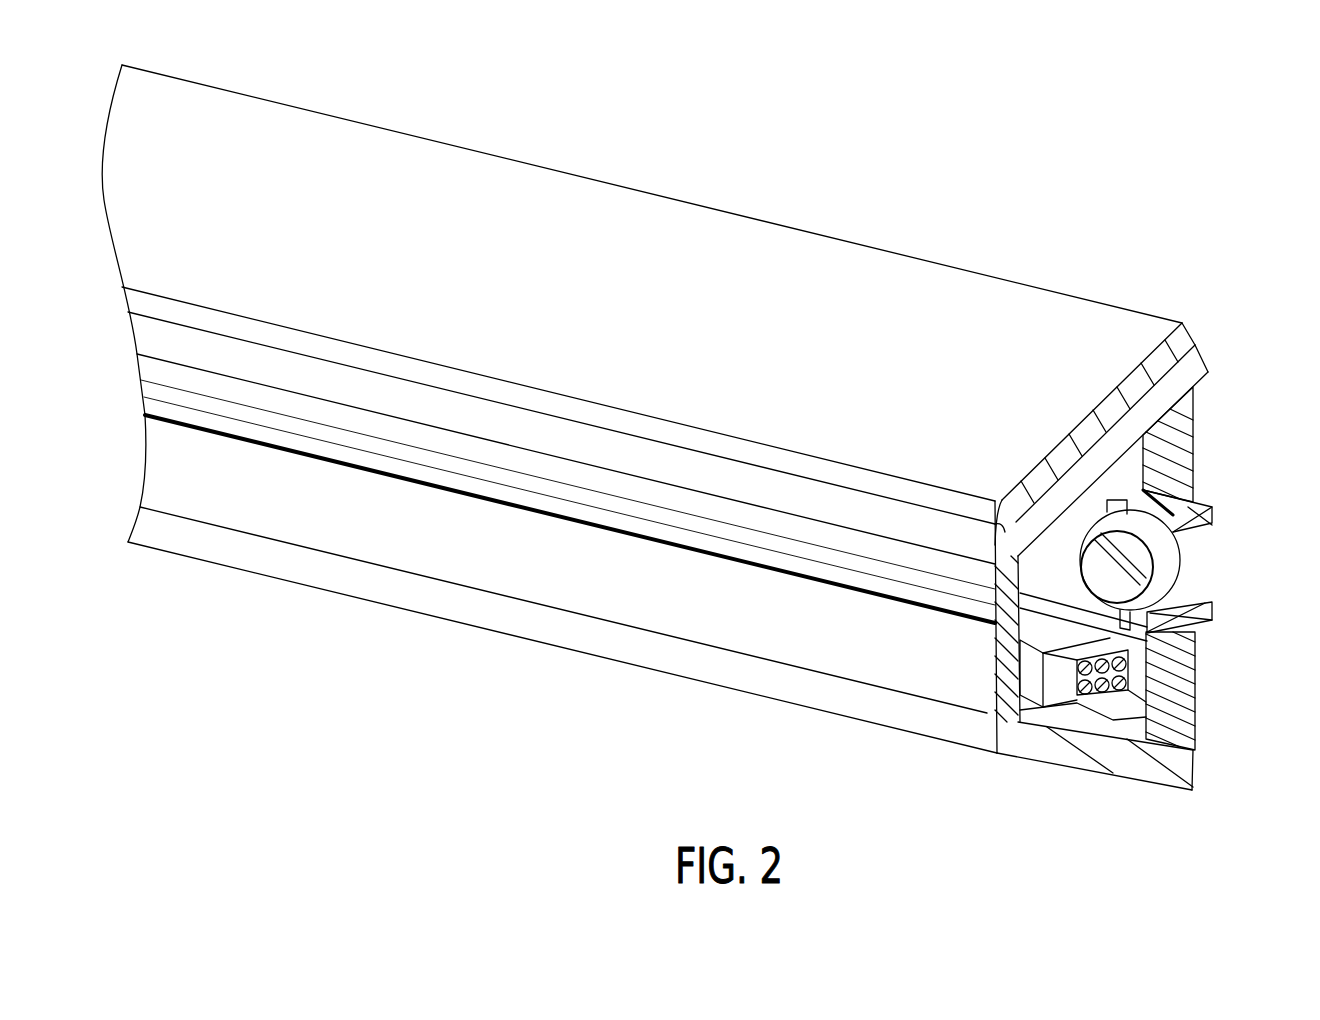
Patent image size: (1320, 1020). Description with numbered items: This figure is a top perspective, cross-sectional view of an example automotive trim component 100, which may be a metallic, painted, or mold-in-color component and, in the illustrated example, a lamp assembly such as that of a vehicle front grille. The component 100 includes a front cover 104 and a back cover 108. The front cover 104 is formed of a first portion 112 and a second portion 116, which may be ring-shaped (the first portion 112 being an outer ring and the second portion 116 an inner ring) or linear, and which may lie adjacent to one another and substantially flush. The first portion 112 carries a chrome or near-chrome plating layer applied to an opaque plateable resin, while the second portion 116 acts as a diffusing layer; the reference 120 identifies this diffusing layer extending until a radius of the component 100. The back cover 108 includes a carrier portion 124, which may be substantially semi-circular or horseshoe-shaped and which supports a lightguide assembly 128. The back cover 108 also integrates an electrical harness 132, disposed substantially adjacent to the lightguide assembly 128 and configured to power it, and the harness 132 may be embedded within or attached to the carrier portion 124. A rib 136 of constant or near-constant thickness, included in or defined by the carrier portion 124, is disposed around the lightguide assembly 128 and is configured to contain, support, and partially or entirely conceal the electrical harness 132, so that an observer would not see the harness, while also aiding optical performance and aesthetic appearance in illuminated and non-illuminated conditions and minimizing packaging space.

The automotive trim component 100 is at (1040, 216).
The front cover 104 is at (950, 657).
The back cover 108 is at (1223, 727).
The first portion 112 is at (1148, 348).
The second portion 116 is at (1180, 402).
The diffusing layer extension 120 is at (1000, 703).
The carrier portion 124 is at (1192, 604).
The lightguide assembly 128 is at (1208, 510).
The electrical harness 132 is at (1132, 662).
The rib 136 is at (1046, 700).